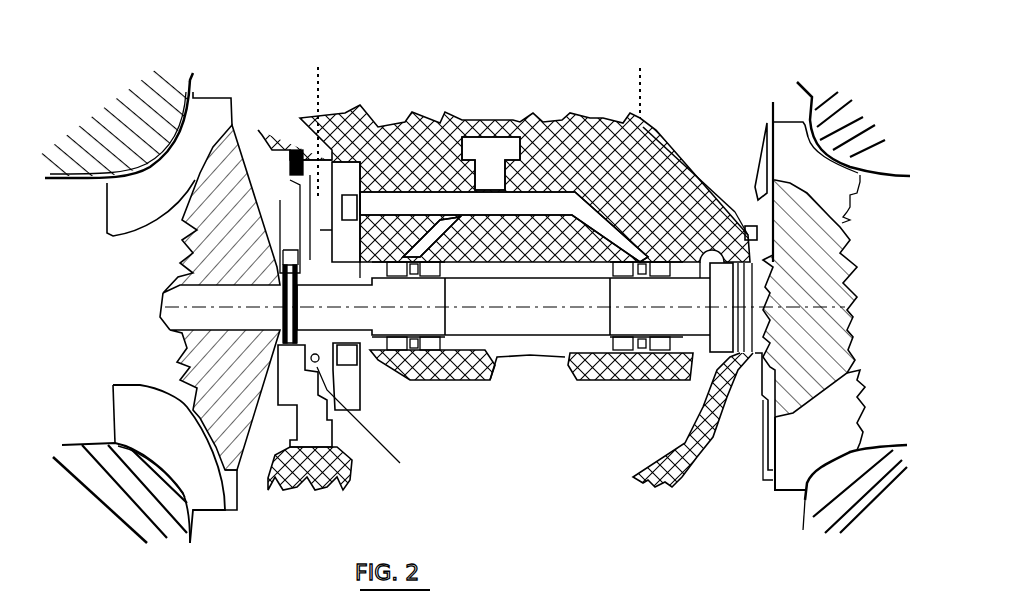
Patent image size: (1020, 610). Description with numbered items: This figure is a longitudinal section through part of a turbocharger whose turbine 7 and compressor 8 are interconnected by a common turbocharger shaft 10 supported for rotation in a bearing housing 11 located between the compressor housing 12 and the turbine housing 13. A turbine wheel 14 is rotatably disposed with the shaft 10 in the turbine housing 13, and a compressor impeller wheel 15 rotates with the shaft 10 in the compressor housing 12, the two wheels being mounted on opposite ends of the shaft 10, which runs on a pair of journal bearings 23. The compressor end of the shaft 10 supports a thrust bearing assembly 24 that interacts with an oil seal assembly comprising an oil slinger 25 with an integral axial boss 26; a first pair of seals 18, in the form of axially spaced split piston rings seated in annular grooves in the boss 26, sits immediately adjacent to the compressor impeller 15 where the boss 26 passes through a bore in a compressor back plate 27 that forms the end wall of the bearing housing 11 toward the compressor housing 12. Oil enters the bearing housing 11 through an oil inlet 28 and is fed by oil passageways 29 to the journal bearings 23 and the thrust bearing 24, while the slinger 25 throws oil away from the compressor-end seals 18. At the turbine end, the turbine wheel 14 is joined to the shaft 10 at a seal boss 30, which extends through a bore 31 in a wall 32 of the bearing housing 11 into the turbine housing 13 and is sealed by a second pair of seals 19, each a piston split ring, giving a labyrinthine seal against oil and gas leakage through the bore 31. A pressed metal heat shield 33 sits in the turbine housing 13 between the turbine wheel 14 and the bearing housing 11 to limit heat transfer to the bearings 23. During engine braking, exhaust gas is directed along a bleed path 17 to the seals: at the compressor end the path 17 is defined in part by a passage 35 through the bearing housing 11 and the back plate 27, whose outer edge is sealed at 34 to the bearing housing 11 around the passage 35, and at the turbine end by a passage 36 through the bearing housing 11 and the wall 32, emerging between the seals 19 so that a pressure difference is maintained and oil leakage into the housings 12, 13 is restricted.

The turbine 7 is at (848, 70).
The compressor 8 is at (108, 95).
The turbocharger shaft 10 is at (502, 302).
The bearing housing 11 is at (567, 133).
The compressor housing 12 is at (193, 73).
The turbine housing 13 is at (843, 288).
The turbine wheel 14 is at (793, 122).
The compressor impeller wheel 15 is at (213, 97).
The bleed path 17 is at (318, 67).
The first pair of seals 18 is at (287, 297).
The second pair of seals 19 is at (747, 352).
The journal bearings 23 is at (430, 353).
The thrust bearing assembly 24 is at (352, 373).
The oil slinger 25 is at (303, 370).
The axial boss 26 is at (280, 265).
The compressor back plate 27 is at (282, 265).
The oil inlet 28 is at (495, 127).
The oil passageways 29 is at (445, 193).
The seal boss 30 is at (753, 383).
The bore 31 is at (745, 360).
The wall 32 is at (750, 227).
The heat shield 33 is at (767, 143).
The seal 34 is at (302, 258).
The passage 35 is at (300, 260).
The passage 36 is at (670, 150).